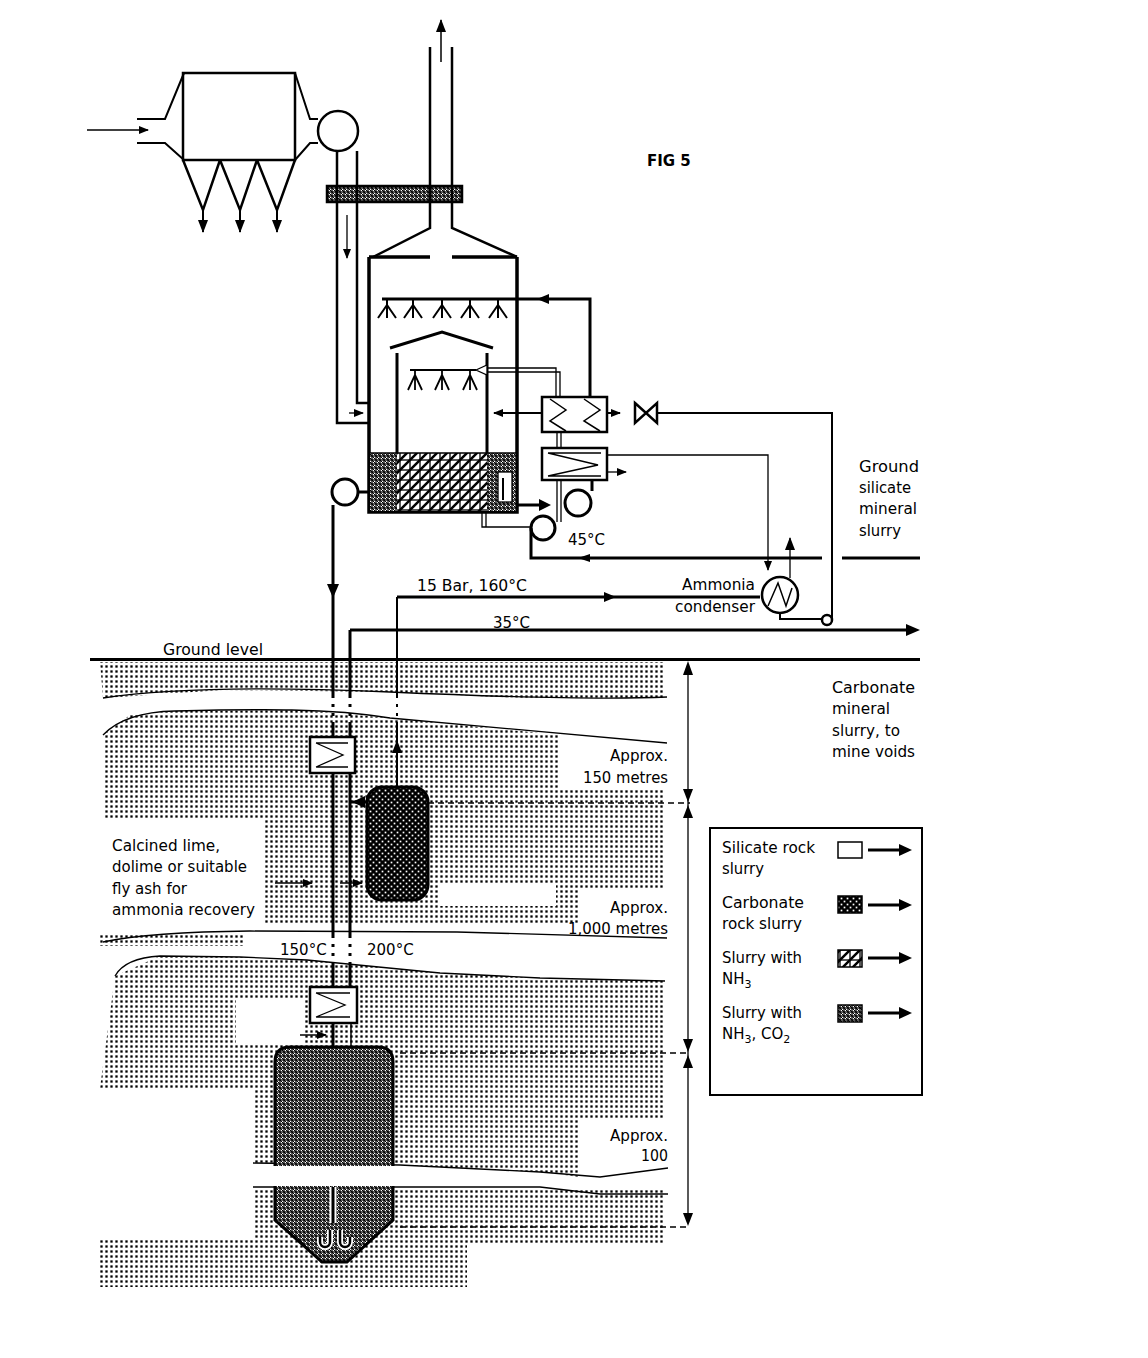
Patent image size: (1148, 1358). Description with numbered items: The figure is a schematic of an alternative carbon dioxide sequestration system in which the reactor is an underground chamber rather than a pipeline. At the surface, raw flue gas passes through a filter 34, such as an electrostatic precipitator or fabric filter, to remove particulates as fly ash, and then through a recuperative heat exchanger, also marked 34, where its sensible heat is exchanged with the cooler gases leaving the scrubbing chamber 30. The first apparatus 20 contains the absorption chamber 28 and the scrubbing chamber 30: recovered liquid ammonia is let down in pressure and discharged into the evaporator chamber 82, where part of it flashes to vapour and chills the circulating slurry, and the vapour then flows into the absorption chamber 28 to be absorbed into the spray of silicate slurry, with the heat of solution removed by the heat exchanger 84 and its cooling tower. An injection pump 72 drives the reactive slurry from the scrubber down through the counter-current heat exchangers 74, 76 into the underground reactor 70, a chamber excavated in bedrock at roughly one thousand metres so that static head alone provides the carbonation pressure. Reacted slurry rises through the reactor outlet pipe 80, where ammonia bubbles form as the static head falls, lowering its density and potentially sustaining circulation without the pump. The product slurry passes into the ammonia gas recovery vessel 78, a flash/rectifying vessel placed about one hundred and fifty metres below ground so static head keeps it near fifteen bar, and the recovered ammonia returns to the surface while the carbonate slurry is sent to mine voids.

The filter 34 is at (237, 44).
The scrubbing chamber 30 is at (526, 350).
The absorption chamber 28 is at (388, 373).
The first apparatus 20 is at (343, 465).
The injection pump 72 is at (322, 491).
The evaporator chamber 82 is at (578, 391).
The heat exchanger 84 is at (602, 497).
The counter-current heat exchanger 74 is at (304, 753).
The ammonia gas recovery vessel 78 is at (434, 876).
The counter-current heat exchanger 76 is at (364, 1005).
The reactor outlet pipe 80 is at (358, 1038).
The underground reactor chamber 70 is at (404, 1133).